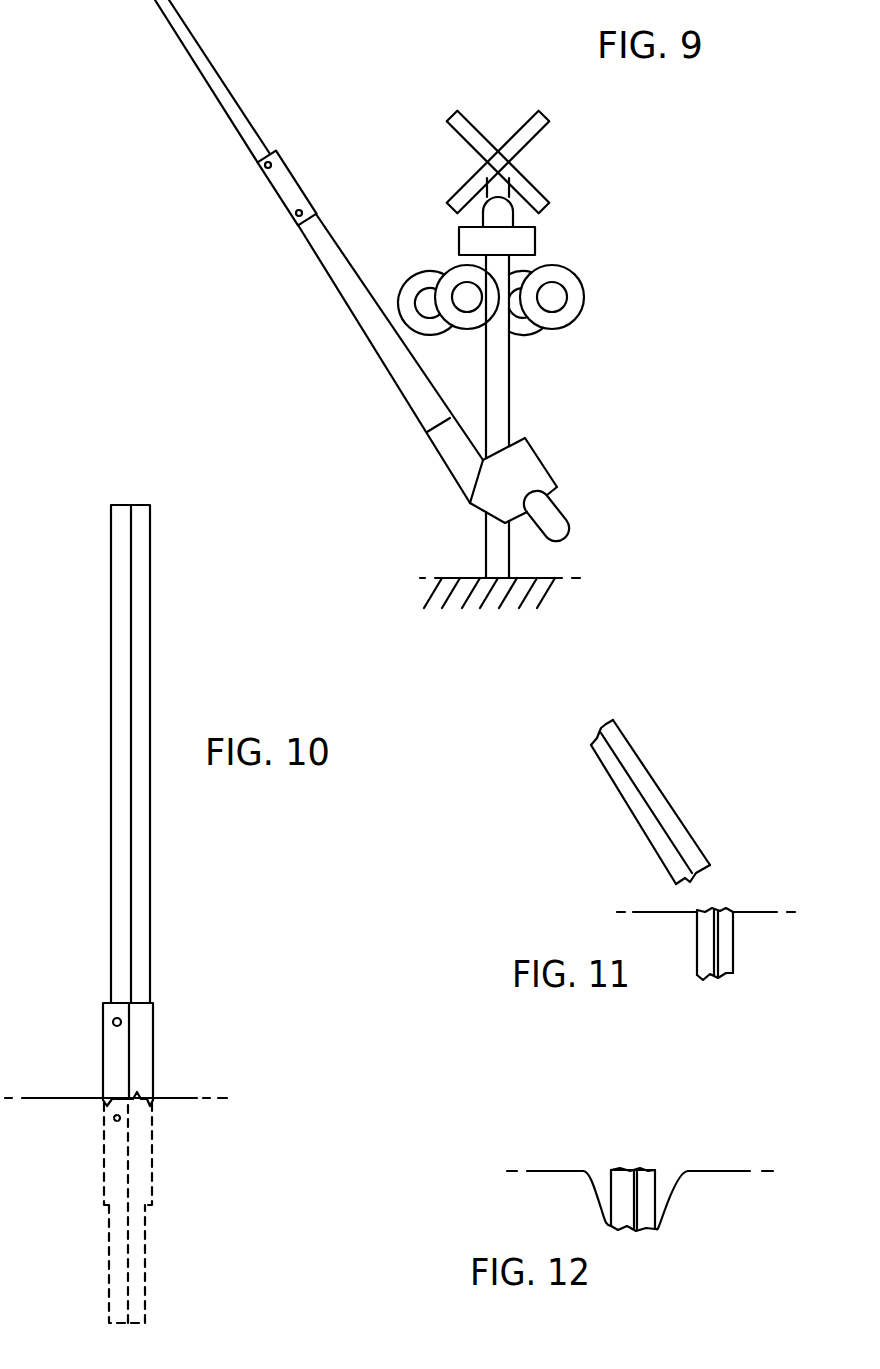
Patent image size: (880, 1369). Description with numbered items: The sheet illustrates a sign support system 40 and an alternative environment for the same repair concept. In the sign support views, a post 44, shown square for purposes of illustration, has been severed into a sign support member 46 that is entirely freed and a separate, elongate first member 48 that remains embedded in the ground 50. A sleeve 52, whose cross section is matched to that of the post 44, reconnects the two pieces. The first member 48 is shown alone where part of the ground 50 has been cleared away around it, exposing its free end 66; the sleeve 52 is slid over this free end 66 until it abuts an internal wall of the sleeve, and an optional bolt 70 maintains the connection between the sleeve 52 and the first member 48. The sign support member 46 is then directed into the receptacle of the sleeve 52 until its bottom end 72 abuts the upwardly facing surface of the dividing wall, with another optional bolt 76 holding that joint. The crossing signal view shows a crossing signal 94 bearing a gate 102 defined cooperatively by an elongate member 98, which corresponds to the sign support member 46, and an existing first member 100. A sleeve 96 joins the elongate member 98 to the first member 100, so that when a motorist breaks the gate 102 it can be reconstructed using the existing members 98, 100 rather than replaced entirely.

In FIG. 10, the sign support system 40 is at (238, 955).
In FIG. 10, the post 44 is at (150, 800).
In FIG. 11, the post 44 is at (673, 807).
In FIG. 10, the sign support member 46 is at (150, 640).
In FIG. 11, the sign support member 46 is at (648, 762).
In FIG. 10, the first member 48 is at (145, 1245).
In FIG. 11, the first member 48 is at (735, 958).
In FIG. 12, the first member 48 is at (648, 1208).
In FIG. 11, the ground 50 is at (680, 955).
In FIG. 10, the sleeve 52 is at (153, 1053).
In FIG. 12, the free end of first member 66 is at (637, 1170).
In FIG. 10, the bolt 70 is at (118, 1120).
In FIG. 11, the bottom end of sign support member 72 is at (695, 875).
In FIG. 10, the bolt 76 is at (112, 1025).
In FIG. 9, the crossing signal 94 is at (550, 360).
In FIG. 9, the sleeve 96 is at (279, 198).
In FIG. 9, the elongate member 98 is at (205, 55).
In FIG. 9, the first member 100 is at (349, 263).
In FIG. 9, the gate 102 is at (336, 240).